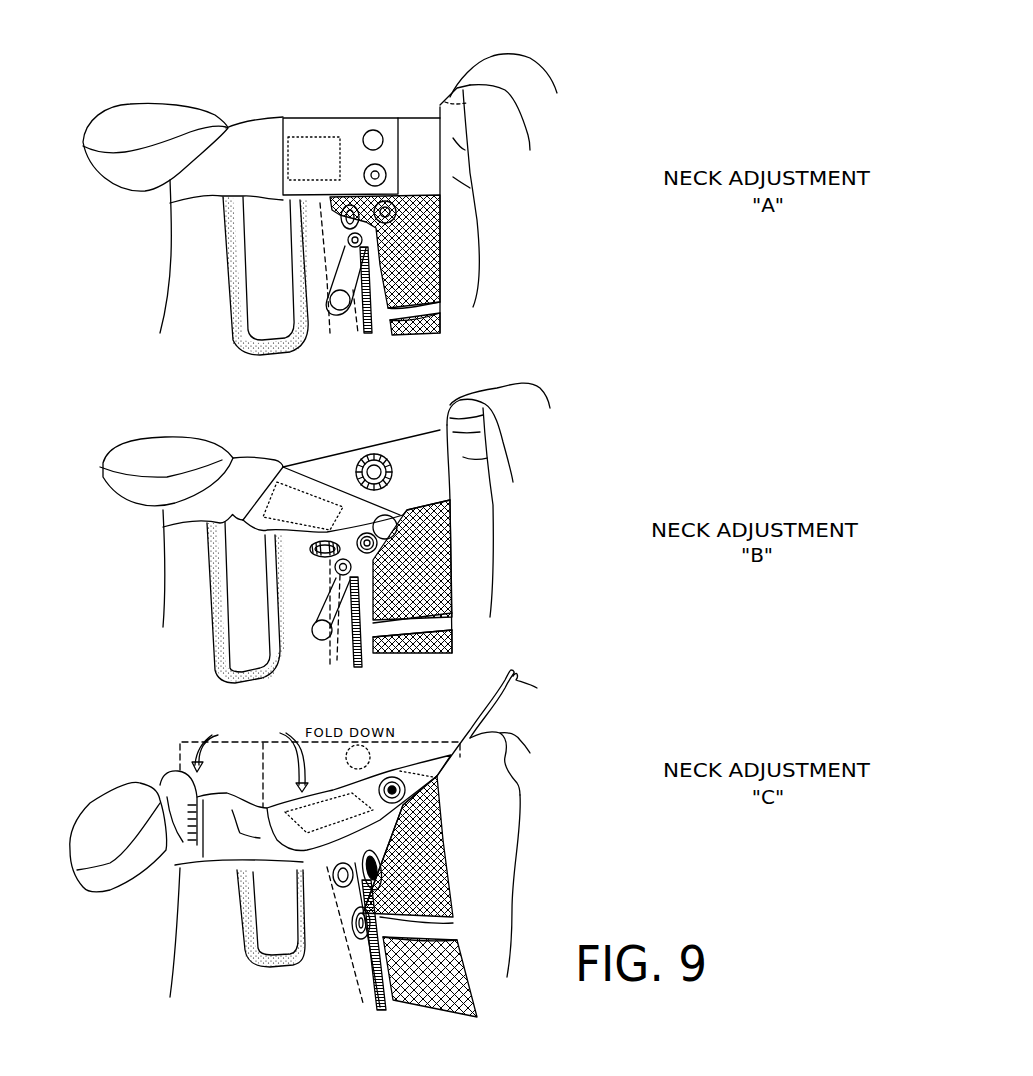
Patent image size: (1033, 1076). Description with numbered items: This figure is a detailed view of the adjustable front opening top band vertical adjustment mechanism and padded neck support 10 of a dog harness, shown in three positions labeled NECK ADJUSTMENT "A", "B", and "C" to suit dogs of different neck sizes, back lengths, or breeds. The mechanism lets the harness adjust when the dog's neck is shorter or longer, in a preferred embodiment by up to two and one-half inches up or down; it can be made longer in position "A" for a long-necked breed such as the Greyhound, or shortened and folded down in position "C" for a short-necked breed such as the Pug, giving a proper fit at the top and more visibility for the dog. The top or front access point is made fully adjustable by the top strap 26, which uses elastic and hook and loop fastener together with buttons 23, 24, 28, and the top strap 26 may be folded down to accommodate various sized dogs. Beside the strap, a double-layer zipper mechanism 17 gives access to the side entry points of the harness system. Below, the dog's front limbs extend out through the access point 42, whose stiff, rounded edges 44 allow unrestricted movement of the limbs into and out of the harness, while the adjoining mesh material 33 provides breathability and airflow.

The padded neck support 10 is at (137, 115).
The double-layer zipper mechanism 17 is at (357, 230).
The button 23 is at (375, 137).
The button 24 is at (378, 175).
The top strap 26 is at (402, 163).
The button 28 is at (380, 460).
The mesh material 33 is at (400, 268).
The access point 42 is at (270, 243).
The stiff, rounded edges 44 is at (238, 307).